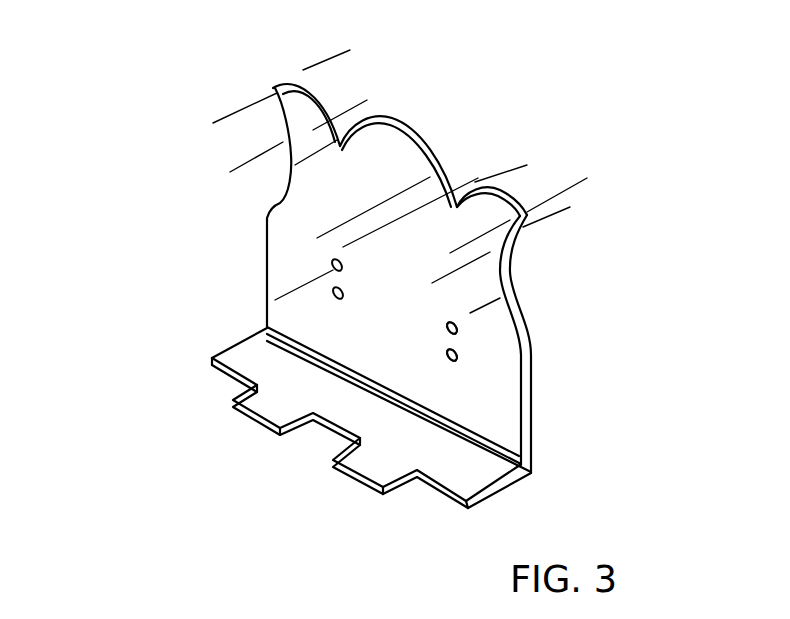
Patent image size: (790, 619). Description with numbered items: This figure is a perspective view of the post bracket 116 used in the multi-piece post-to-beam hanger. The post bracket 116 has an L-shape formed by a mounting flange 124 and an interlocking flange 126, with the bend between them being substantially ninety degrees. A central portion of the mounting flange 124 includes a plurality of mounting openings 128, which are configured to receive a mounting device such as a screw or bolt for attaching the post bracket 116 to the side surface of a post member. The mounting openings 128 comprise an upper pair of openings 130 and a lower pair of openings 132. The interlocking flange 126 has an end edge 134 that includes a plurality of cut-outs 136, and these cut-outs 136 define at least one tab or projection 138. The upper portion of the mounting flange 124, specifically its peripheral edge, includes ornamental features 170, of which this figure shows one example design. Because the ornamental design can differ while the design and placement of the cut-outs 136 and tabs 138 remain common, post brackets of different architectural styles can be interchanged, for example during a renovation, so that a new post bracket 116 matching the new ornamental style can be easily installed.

The post bracket 116 is at (412, 112).
The mounting flange 124 is at (380, 243).
The interlocking flange 126 is at (314, 432).
The mounting openings 128 is at (473, 335).
The upper pair of openings 130 is at (449, 324).
The lower pair of openings 132 is at (446, 352).
The end edge 134 is at (217, 364).
The cut-outs 136 is at (217, 388).
The tab 138 is at (388, 467).
The ornamental features 170 is at (337, 97).